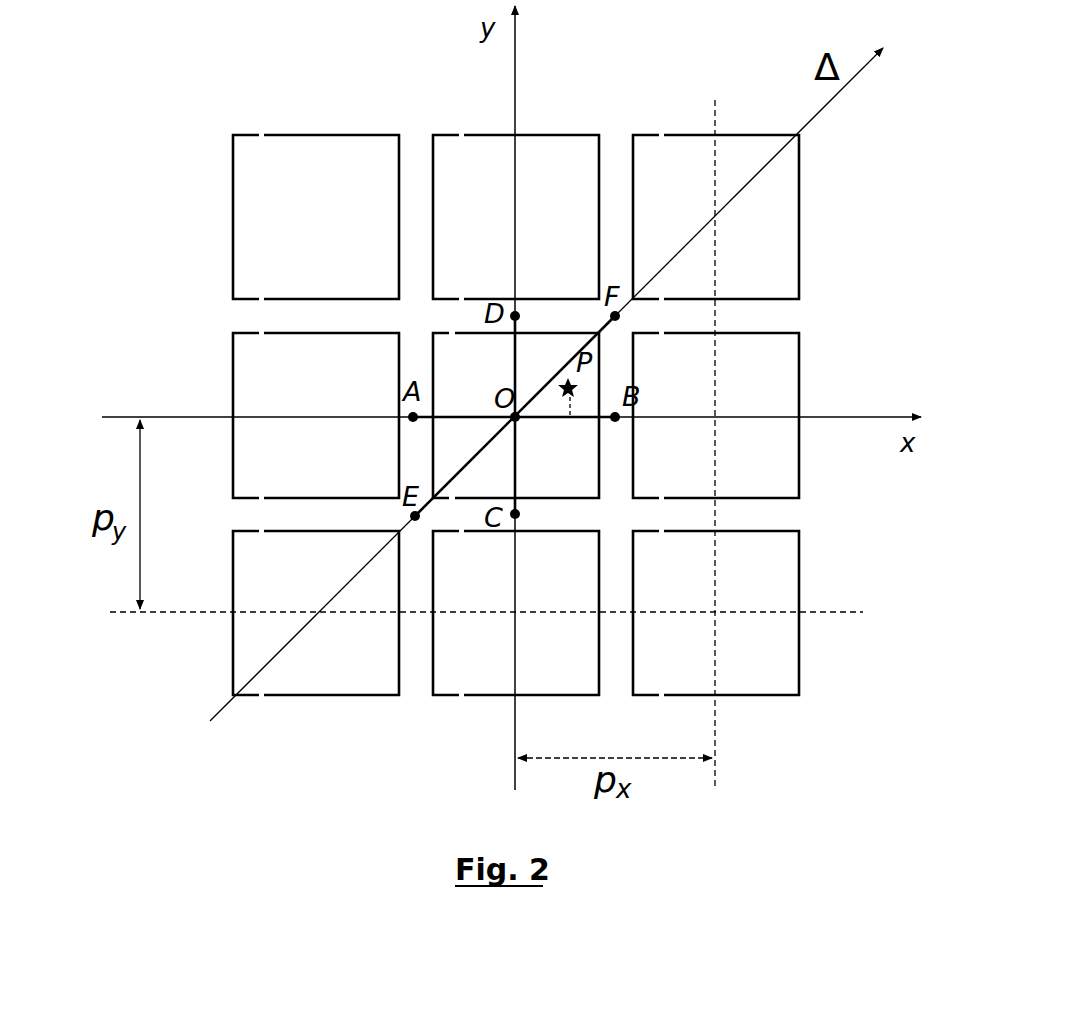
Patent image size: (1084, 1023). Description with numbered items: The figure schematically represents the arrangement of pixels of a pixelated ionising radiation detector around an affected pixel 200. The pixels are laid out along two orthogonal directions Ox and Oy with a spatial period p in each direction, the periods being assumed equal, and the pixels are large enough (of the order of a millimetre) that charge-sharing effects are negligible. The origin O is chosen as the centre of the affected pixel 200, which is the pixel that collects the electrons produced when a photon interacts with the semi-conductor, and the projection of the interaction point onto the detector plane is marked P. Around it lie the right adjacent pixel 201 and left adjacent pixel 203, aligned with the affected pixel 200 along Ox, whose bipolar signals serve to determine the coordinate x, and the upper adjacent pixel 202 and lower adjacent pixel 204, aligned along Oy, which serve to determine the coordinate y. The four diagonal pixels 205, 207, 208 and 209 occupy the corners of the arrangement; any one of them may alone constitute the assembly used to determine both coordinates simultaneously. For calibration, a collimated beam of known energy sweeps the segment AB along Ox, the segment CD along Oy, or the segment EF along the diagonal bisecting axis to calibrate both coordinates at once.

The affected pixel 200 is at (620, 328).
The right adjacent pixel 201 is at (793, 405).
The upper adjacent pixel 202 is at (555, 155).
The left adjacent pixel 203 is at (248, 375).
The lower adjacent pixel 204 is at (477, 696).
The diagonal adjacent pixel 205 is at (252, 168).
The diagonal adjacent pixel 207 is at (790, 185).
The diagonal adjacent pixel 208 is at (322, 696).
The diagonal adjacent pixel 209 is at (788, 588).